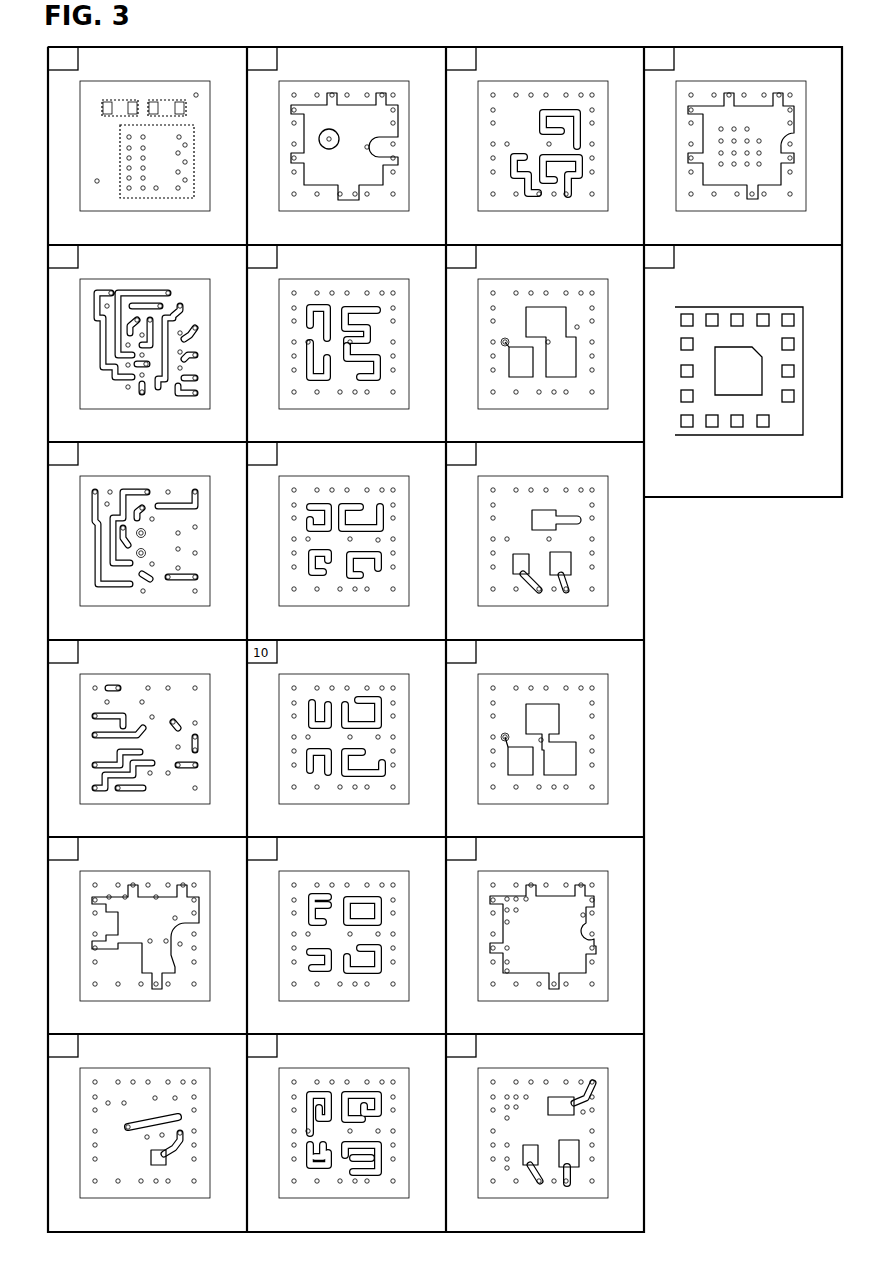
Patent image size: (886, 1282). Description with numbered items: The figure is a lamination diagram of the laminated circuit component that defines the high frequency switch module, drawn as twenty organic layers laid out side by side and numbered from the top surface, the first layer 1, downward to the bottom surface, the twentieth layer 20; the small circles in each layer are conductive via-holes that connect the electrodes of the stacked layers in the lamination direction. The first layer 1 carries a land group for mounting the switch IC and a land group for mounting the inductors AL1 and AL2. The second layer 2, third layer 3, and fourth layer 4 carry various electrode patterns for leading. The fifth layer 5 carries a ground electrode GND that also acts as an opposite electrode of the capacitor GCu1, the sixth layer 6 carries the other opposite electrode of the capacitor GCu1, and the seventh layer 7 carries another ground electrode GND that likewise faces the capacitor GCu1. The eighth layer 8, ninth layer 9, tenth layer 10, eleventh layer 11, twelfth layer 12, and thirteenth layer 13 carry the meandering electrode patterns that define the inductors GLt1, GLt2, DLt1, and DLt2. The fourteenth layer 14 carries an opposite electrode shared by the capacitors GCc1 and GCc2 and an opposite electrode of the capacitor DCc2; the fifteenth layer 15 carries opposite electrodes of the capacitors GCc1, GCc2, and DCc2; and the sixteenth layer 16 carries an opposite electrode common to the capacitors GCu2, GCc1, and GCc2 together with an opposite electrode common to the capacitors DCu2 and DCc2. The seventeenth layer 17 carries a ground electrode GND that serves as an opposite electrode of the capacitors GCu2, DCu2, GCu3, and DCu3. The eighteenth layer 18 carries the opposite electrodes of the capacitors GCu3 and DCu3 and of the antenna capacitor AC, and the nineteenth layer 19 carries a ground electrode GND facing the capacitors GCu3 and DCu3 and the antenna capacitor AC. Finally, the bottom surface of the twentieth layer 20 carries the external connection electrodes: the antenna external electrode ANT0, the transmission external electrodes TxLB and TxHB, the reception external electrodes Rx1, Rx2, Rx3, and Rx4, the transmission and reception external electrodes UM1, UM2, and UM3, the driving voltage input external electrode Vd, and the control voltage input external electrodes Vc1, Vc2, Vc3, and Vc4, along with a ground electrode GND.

The first layer 1 is at (139, 129).
The second layer 2 is at (129, 327).
The third layer 3 is at (129, 524).
The fourth layer 4 is at (129, 722).
The fifth layer 5 is at (129, 919).
The sixth layer 6 is at (129, 1126).
The seventh layer 7 is at (328, 129).
The eighth layer 8 is at (328, 336).
The ninth layer 9 is at (328, 533).
The tenth layer 10 is at (175, 151).
The eleventh layer 11 is at (328, 928).
The twelfth layer 12 is at (328, 1125).
The thirteenth layer 13 is at (528, 139).
The fourteenth layer 14 is at (527, 337).
The fifteenth layer 15 is at (527, 533).
The sixteenth layer 16 is at (528, 732).
The seventeenth layer 17 is at (527, 919).
The eighteenth layer 18 is at (527, 1128).
The nineteenth layer 19 is at (725, 129).
The twentieth layer 20 is at (735, 362).
The inductor AL1 is at (167, 90).
The inductor AL2 is at (120, 90).
The ground electrode GND is at (344, 132).
The inductor GLt1 is at (562, 105).
The inductor GLt2 is at (576, 194).
The inductor DLt1 is at (311, 299).
The inductor DLt2 is at (522, 194).
The capacitor GCc1 is at (565, 319).
The capacitor GCc2 is at (565, 319).
The capacitor DCc2 is at (519, 383).
The capacitor GCu1 is at (175, 1176).
The capacitor GCu2 is at (558, 714).
The capacitor DCu2 is at (520, 778).
The capacitor GCu3 is at (583, 1181).
The capacitor DCu3 is at (520, 1183).
The antenna capacitor AC is at (570, 1082).
The control voltage input external electrode Vc1 is at (669, 300).
The control voltage input external electrode Vc2 is at (693, 306).
The control voltage input external electrode Vc3 is at (720, 300).
The control voltage input external electrode Vc4 is at (747, 306).
The antenna external electrode ANT0 is at (778, 305).
The driving voltage input external electrode Vd is at (671, 356).
The reception external electrode Rx1 is at (720, 441).
The reception external electrode Rx2 is at (697, 447).
The reception external electrode Rx3 is at (668, 406).
The reception external electrode Rx4 is at (668, 382).
The transmission external electrode TxHB is at (749, 447).
The transmission external electrode TxLB is at (770, 441).
The transmission and reception external electrode UM1 is at (803, 370).
The transmission and reception external electrode UM2 is at (803, 395).
The transmission and reception external electrode UM3 is at (802, 423).